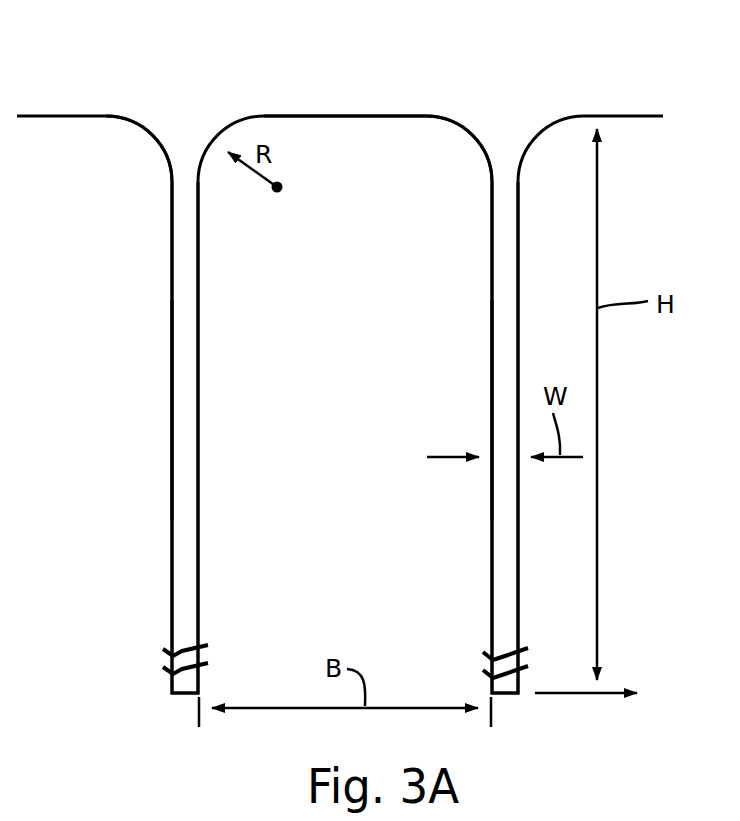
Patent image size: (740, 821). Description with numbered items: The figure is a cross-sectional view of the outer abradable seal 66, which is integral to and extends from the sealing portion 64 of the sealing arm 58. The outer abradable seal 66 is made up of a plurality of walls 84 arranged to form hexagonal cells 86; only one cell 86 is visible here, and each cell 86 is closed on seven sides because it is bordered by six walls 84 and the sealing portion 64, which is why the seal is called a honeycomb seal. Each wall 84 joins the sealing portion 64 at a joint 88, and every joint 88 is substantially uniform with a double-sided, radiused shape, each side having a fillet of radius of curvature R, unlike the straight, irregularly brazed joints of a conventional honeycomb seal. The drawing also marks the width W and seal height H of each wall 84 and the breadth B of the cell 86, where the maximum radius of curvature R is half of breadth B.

The sealing arm 58 is at (562, 66).
The sealing portion 64 is at (303, 116).
The joint 88 is at (188, 133).
The outer abradable seal 66 is at (168, 306).
The wall 84 is at (172, 503).
The hexagonal cell 86 is at (357, 418).